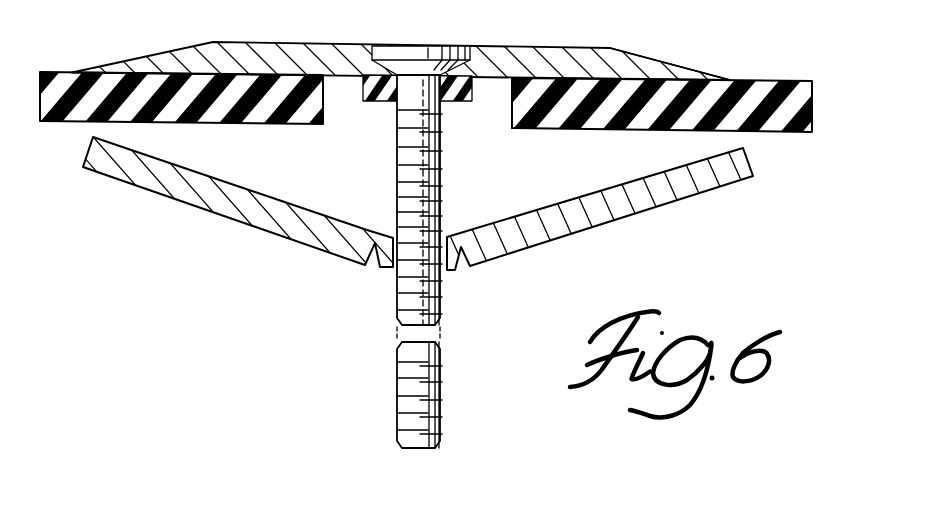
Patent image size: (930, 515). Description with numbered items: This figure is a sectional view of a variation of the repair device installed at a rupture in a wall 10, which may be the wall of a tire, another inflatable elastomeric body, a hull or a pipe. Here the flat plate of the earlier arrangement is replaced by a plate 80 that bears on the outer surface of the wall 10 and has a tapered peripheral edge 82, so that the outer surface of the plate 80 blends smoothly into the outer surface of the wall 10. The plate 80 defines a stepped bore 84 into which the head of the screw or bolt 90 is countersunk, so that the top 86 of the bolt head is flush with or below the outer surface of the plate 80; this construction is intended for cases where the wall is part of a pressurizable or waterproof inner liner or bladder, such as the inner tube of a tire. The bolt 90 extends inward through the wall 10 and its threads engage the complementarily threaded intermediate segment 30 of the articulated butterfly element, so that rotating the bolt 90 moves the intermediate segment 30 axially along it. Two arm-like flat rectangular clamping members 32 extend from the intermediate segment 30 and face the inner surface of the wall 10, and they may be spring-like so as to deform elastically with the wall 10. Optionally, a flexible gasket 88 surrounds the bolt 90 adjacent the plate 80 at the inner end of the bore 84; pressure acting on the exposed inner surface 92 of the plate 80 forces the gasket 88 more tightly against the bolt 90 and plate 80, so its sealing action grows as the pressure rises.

The wall 10 is at (743, 80).
The plate 80 is at (537, 45).
The tapered peripheral edge 82 is at (648, 56).
The stepped bore 84 is at (458, 47).
The top of the bolt head 86 is at (385, 46).
The flexible gasket 88 is at (367, 101).
The exposed inner surface 92 is at (504, 80).
The screw or bolt 90 is at (441, 168).
The clamping members 32 is at (210, 190).
The intermediate segment 30 is at (447, 270).